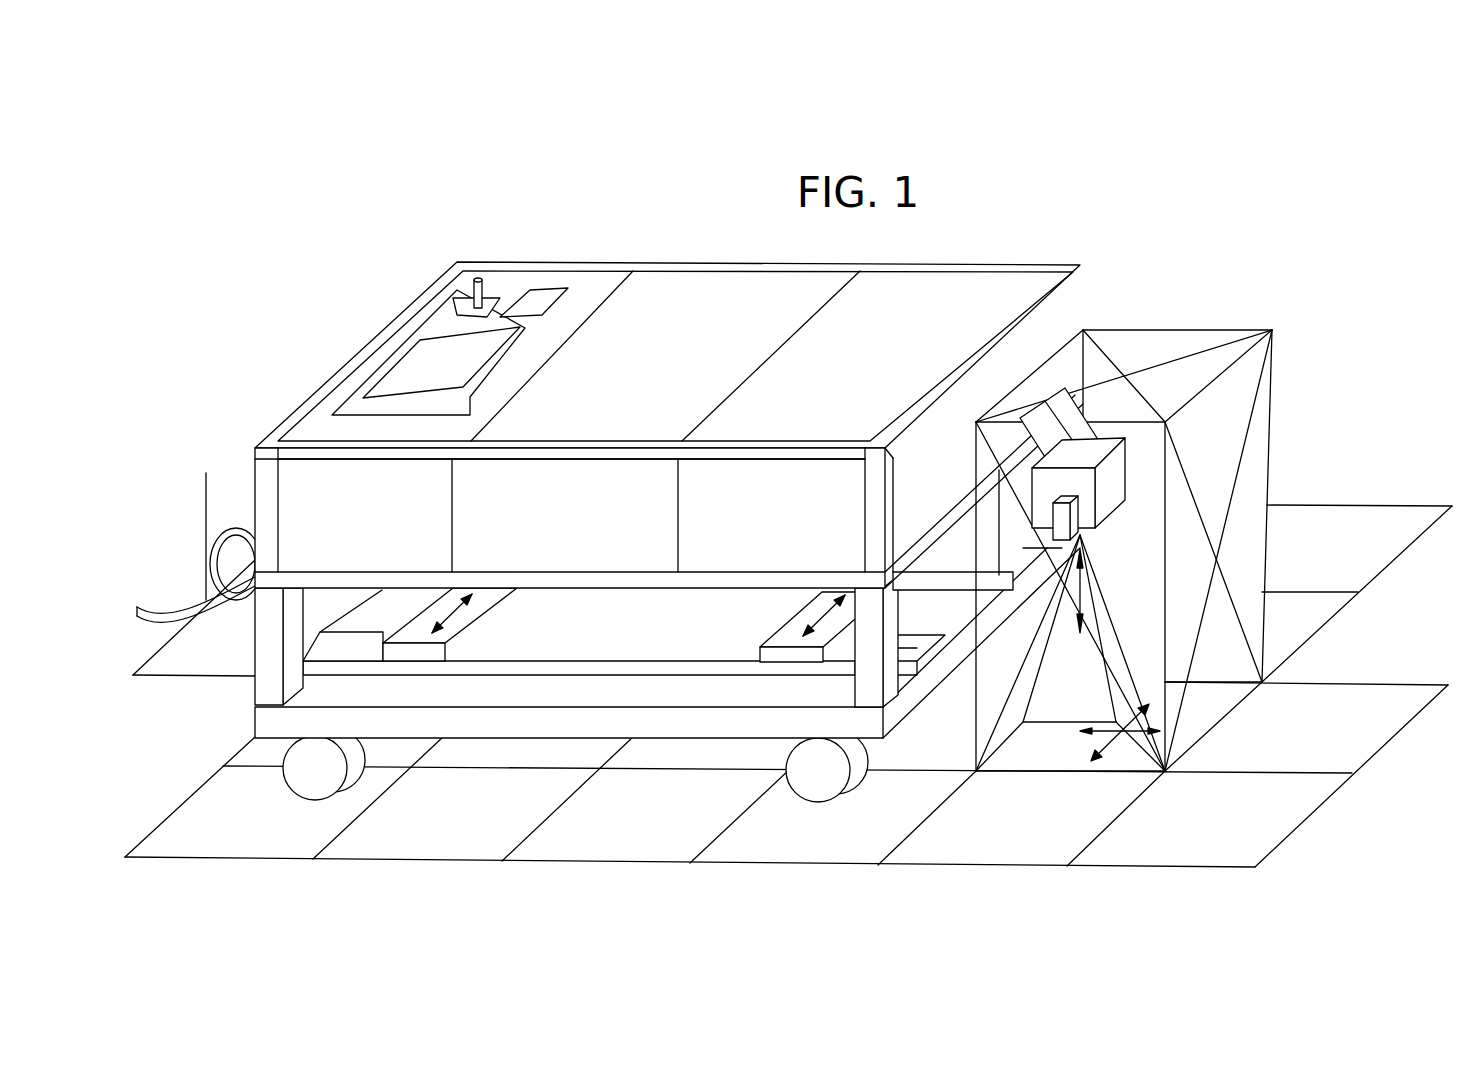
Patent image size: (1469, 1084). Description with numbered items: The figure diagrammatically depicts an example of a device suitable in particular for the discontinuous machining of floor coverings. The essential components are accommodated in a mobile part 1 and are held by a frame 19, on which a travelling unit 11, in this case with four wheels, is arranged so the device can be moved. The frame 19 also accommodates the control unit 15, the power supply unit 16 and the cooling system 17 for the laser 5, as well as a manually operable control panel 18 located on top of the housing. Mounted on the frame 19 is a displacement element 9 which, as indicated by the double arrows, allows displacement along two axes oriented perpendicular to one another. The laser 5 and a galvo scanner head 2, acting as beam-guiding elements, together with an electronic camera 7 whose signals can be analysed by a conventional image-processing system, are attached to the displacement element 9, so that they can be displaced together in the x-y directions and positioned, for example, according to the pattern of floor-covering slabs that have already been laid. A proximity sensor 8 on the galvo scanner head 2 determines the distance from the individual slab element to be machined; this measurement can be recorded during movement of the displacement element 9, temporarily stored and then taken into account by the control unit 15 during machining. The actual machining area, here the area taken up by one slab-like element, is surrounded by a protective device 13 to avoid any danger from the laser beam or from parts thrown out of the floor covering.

The mobile part 1 is at (610, 559).
The galvo scanner head 2 is at (1120, 462).
The laser 5 is at (945, 560).
The electronic camera 7 is at (1067, 413).
The proximity sensor 8 is at (1067, 522).
The displacement element 9 is at (513, 647).
The travelling unit 11 is at (318, 775).
The protective device 13 is at (1268, 497).
The control unit 15 is at (389, 527).
The power supply unit 16 is at (575, 522).
The cooling system 17 is at (785, 524).
The control panel 18 is at (483, 323).
The frame 19 is at (267, 680).